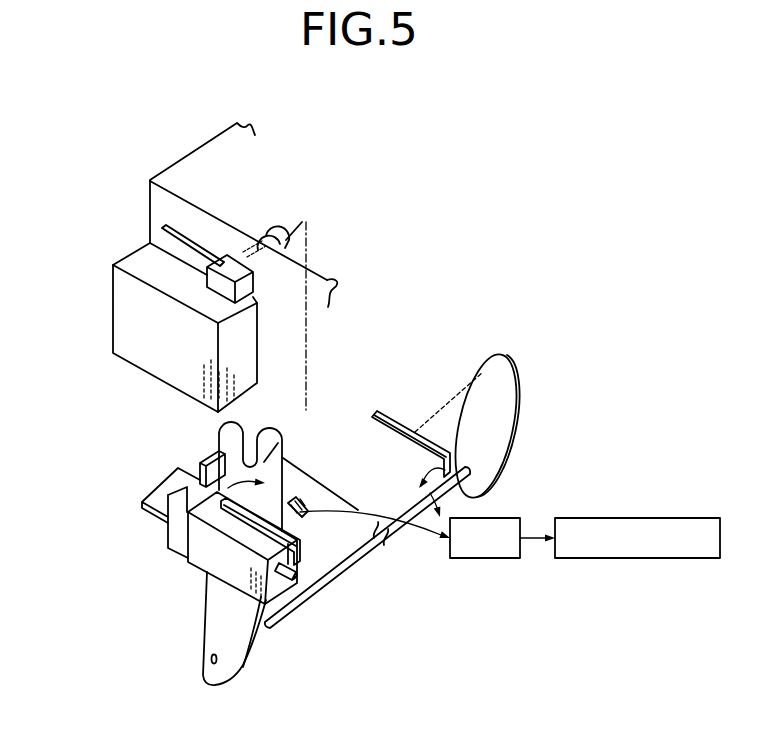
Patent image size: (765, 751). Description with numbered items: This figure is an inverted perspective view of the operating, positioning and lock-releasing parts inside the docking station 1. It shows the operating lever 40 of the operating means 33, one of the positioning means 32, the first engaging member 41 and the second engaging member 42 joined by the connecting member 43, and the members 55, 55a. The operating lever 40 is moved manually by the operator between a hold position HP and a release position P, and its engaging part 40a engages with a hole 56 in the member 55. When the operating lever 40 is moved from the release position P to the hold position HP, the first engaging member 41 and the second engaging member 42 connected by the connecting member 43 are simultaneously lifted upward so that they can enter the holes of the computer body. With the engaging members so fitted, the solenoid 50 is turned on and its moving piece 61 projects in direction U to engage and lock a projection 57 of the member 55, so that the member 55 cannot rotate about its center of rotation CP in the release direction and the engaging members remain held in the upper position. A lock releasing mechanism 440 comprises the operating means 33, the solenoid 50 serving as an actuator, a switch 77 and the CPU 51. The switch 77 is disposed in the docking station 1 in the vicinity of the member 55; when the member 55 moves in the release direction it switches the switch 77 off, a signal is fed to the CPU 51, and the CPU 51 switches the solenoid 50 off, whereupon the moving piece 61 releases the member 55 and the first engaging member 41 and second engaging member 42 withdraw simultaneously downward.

The docking station 1 is at (348, 405).
The positioning means 32 is at (173, 577).
The operating means 33 is at (145, 350).
The operating lever 40 is at (225, 290).
The engaging part 40a is at (288, 243).
The first engaging member 41 is at (304, 600).
The second engaging member 42 is at (392, 415).
The connecting member 43 is at (288, 622).
The solenoid 50 is at (667, 518).
The CPU 51 is at (500, 518).
The member 55 is at (282, 462).
The member 55a is at (493, 387).
The hole 56 is at (232, 467).
The projection 57 is at (200, 463).
The moving piece 61 is at (153, 508).
The switch 77 is at (308, 512).
The lock releasing mechanism 440 is at (447, 605).